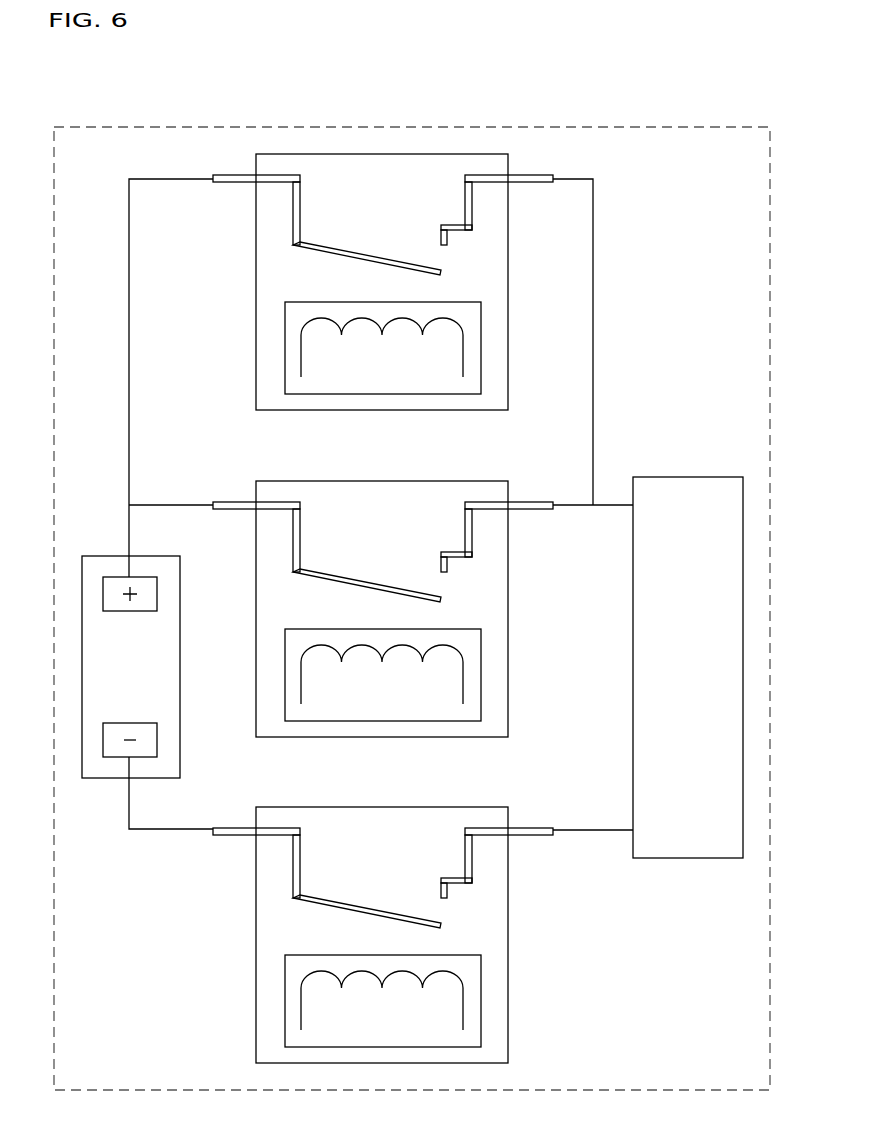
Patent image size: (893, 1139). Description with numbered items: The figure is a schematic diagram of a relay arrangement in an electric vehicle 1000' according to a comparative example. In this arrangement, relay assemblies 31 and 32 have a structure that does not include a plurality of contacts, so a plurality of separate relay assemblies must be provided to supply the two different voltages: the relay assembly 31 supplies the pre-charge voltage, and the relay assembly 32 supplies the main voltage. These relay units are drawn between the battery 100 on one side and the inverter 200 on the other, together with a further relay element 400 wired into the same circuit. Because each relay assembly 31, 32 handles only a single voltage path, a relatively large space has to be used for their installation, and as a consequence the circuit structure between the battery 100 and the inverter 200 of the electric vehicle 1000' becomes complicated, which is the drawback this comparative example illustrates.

The electric vehicle 1000' is at (412, 575).
The relay assembly 32 is at (525, 285).
The relay assembly 31 is at (525, 612).
The additional melting furnace 400 is at (526, 939).
The battery 100 is at (100, 538).
The inverter 200 is at (700, 460).